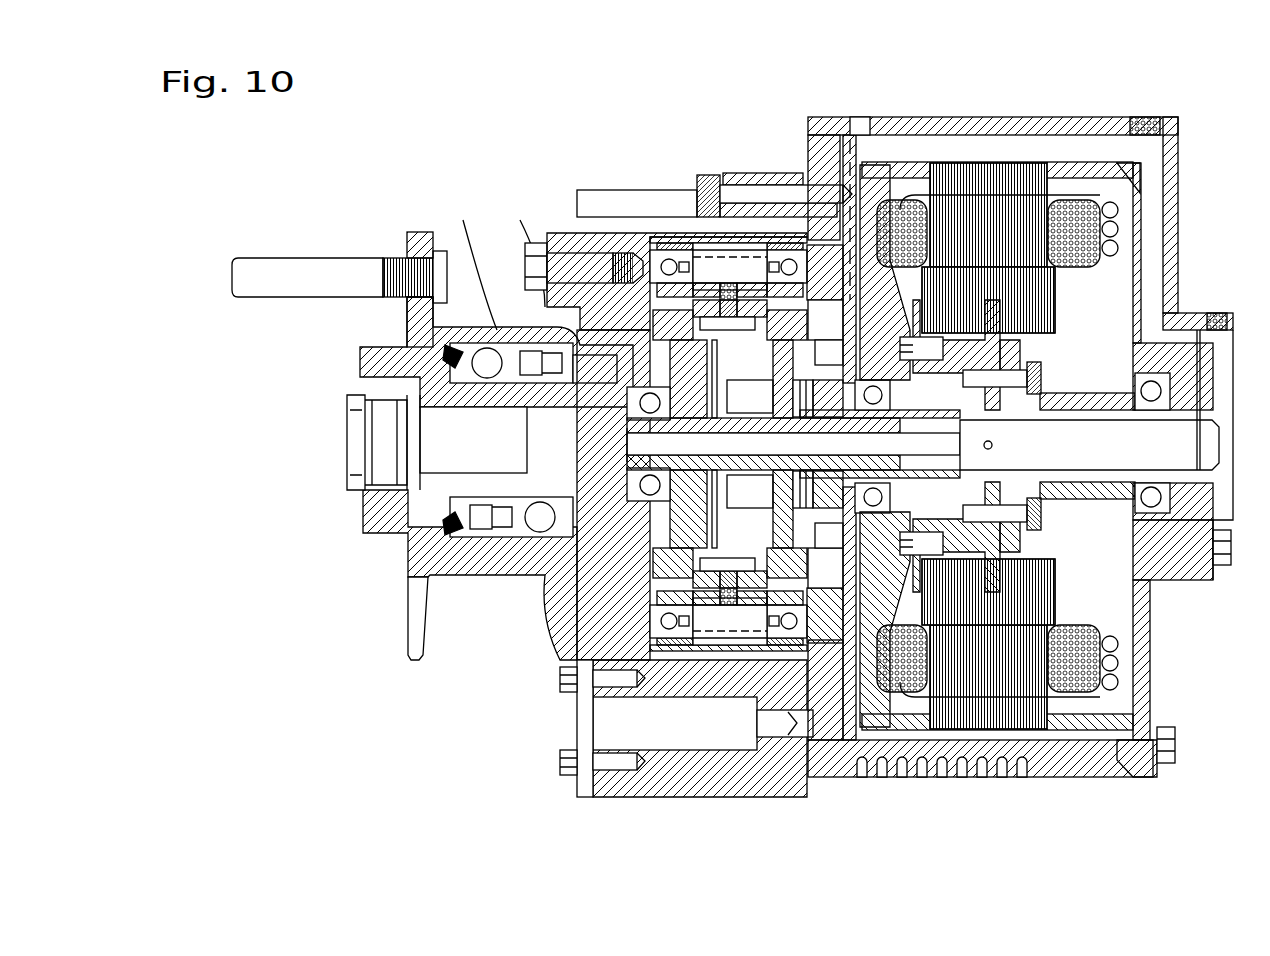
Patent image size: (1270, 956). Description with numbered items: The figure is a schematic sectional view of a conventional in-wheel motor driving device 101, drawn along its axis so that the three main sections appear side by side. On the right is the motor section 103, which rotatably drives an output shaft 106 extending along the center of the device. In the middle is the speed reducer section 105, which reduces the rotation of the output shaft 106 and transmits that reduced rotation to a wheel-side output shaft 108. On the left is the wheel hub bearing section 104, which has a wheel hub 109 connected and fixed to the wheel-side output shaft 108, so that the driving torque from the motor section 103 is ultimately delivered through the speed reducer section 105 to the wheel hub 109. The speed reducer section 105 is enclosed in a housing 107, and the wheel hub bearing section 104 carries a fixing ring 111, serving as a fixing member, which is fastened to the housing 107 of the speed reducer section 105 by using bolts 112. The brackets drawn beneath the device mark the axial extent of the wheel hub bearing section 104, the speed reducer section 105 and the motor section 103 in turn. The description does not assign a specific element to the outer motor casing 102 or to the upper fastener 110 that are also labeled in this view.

The in-wheel motor driving device 101 is at (775, 160).
The motor housing 102 is at (1083, 137).
The motor section 103 is at (1164, 812).
The wheel hub bearing section 104 is at (590, 812).
The speed reducer section 105 is at (810, 812).
The output shaft 106 is at (1077, 403).
The housing 107 is at (612, 237).
The wheel-side output shaft 108 is at (513, 452).
The wheel hub 109 is at (412, 575).
The fastening bolt 110 is at (712, 198).
The fixing ring 111 is at (453, 352).
The bolts 112 is at (530, 245).